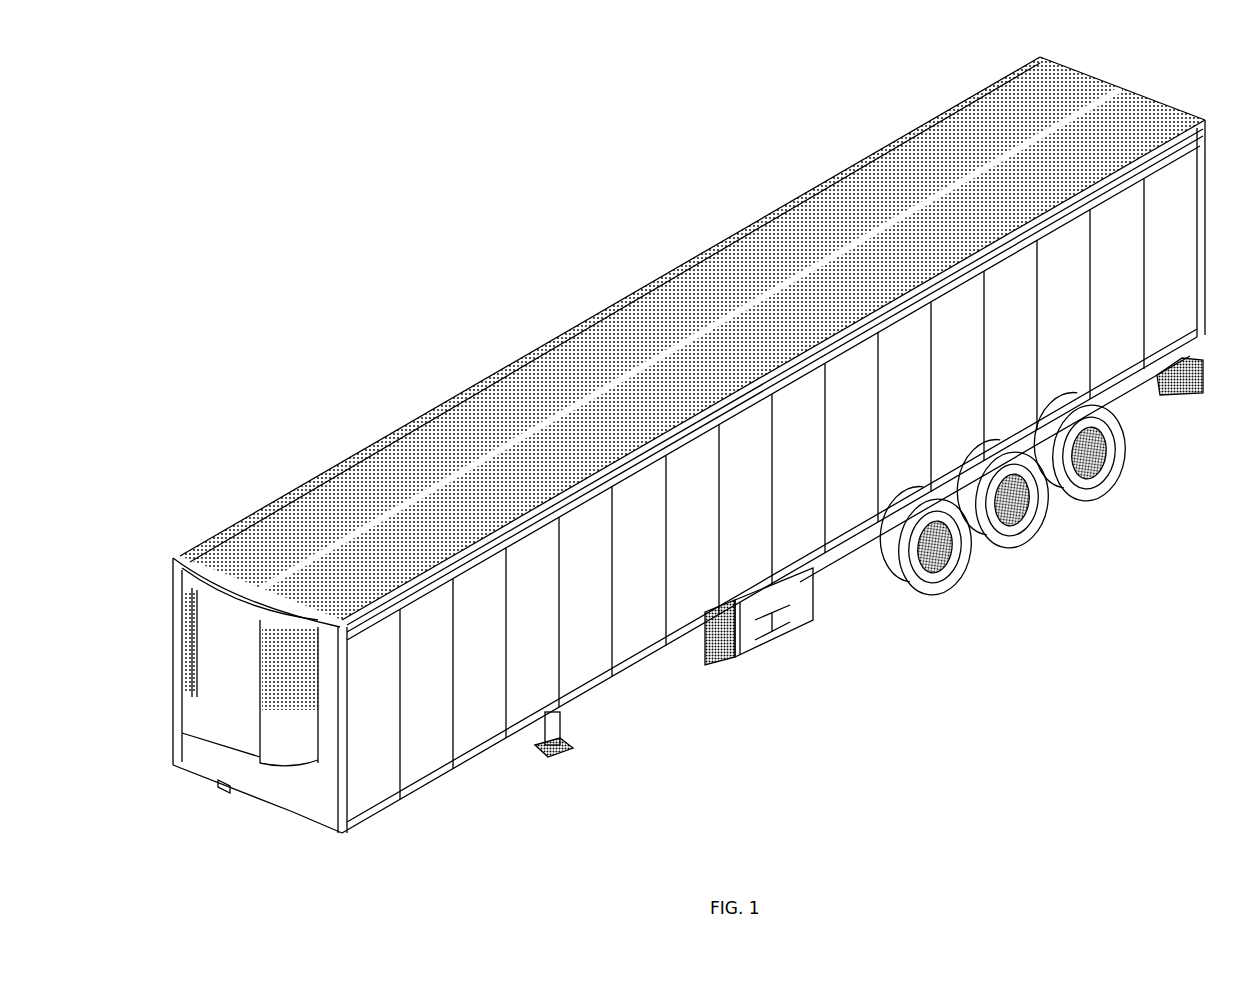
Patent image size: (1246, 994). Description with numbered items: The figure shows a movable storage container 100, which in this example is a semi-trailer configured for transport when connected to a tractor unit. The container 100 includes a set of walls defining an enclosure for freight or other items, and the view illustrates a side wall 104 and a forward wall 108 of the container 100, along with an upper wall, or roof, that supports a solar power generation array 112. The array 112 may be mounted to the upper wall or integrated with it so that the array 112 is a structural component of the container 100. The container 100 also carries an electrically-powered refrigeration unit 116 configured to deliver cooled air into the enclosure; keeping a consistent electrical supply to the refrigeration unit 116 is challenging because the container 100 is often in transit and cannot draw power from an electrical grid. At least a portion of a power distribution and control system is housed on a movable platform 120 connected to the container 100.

The movable storage container 100 is at (685, 478).
The side wall 104 is at (590, 662).
The forward wall 108 is at (303, 790).
The solar power generation array 112 is at (388, 458).
The refrigeration unit 116 is at (233, 590).
The movable platform 120 is at (833, 587).